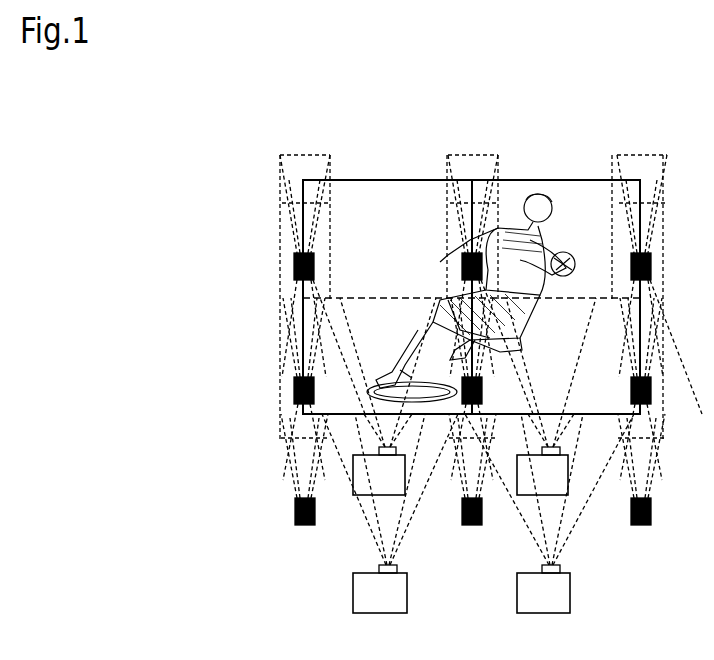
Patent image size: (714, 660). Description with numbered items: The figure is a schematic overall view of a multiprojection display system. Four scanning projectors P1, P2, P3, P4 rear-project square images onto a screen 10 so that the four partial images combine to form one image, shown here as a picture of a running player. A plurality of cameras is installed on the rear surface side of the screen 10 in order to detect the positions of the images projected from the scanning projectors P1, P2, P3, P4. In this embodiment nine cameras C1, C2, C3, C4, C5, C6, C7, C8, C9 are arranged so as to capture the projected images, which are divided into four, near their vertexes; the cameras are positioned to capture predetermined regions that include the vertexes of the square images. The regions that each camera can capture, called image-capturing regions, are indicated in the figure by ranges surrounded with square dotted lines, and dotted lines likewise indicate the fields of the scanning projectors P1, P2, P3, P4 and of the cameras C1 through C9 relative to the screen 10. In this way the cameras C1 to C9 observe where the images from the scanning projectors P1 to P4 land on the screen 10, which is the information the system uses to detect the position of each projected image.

The screen 10 is at (545, 180).
The camera C1 is at (289, 263).
The camera C2 is at (472, 266).
The camera C3 is at (656, 263).
The camera C4 is at (289, 385).
The camera C5 is at (472, 390).
The camera C6 is at (656, 383).
The camera C7 is at (290, 522).
The camera C8 is at (456, 523).
The camera C9 is at (624, 523).
The scanning projector P1 is at (379, 471).
The scanning projector P2 is at (542, 471).
The scanning projector P3 is at (380, 589).
The scanning projector P4 is at (543, 589).